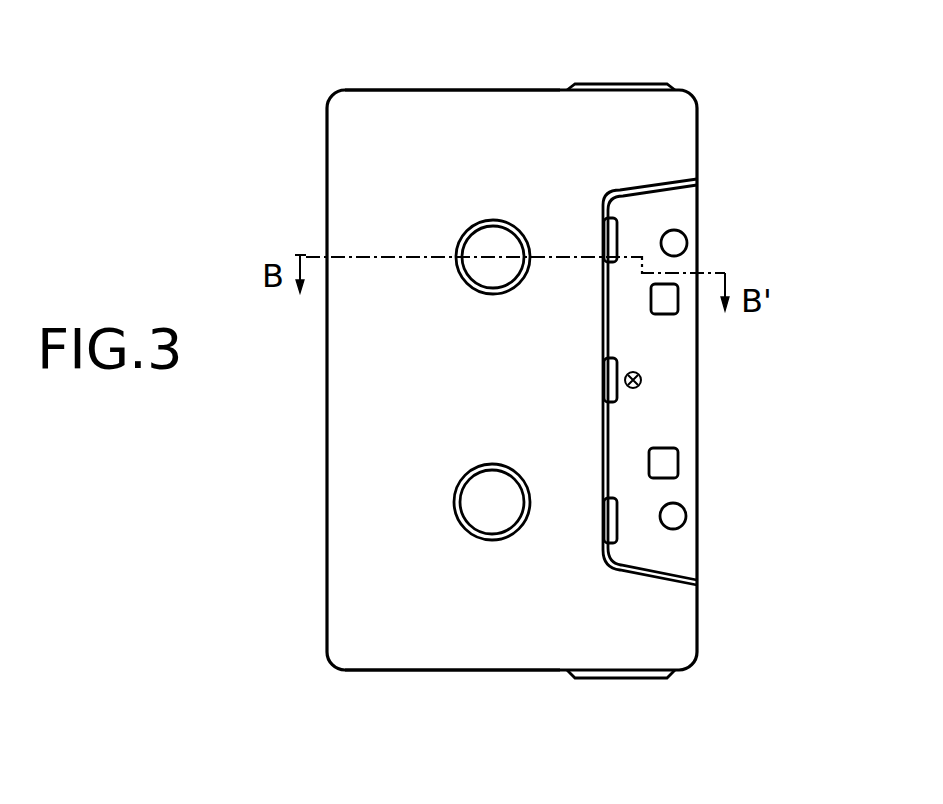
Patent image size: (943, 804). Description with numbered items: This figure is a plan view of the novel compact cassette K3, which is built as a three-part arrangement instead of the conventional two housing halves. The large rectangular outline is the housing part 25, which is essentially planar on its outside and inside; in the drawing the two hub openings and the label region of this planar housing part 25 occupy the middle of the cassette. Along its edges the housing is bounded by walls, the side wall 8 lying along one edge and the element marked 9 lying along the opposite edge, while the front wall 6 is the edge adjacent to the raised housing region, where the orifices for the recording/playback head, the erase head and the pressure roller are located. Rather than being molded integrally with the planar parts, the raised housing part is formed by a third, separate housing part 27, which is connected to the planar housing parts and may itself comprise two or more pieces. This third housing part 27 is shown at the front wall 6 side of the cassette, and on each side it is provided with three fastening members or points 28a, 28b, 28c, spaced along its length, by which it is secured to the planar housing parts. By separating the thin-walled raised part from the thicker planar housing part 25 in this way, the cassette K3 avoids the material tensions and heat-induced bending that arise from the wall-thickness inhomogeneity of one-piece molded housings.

The novel cassette K3 is at (312, 152).
The upper half of cassette 9 is at (418, 90).
The side wall 8 is at (446, 670).
The housing part 25 is at (490, 400).
The front wall 6 is at (733, 373).
The third housing part 27 is at (679, 347).
The fastening member 28a is at (609, 228).
The fastening member 28b is at (610, 392).
The fastening member 28c is at (609, 525).